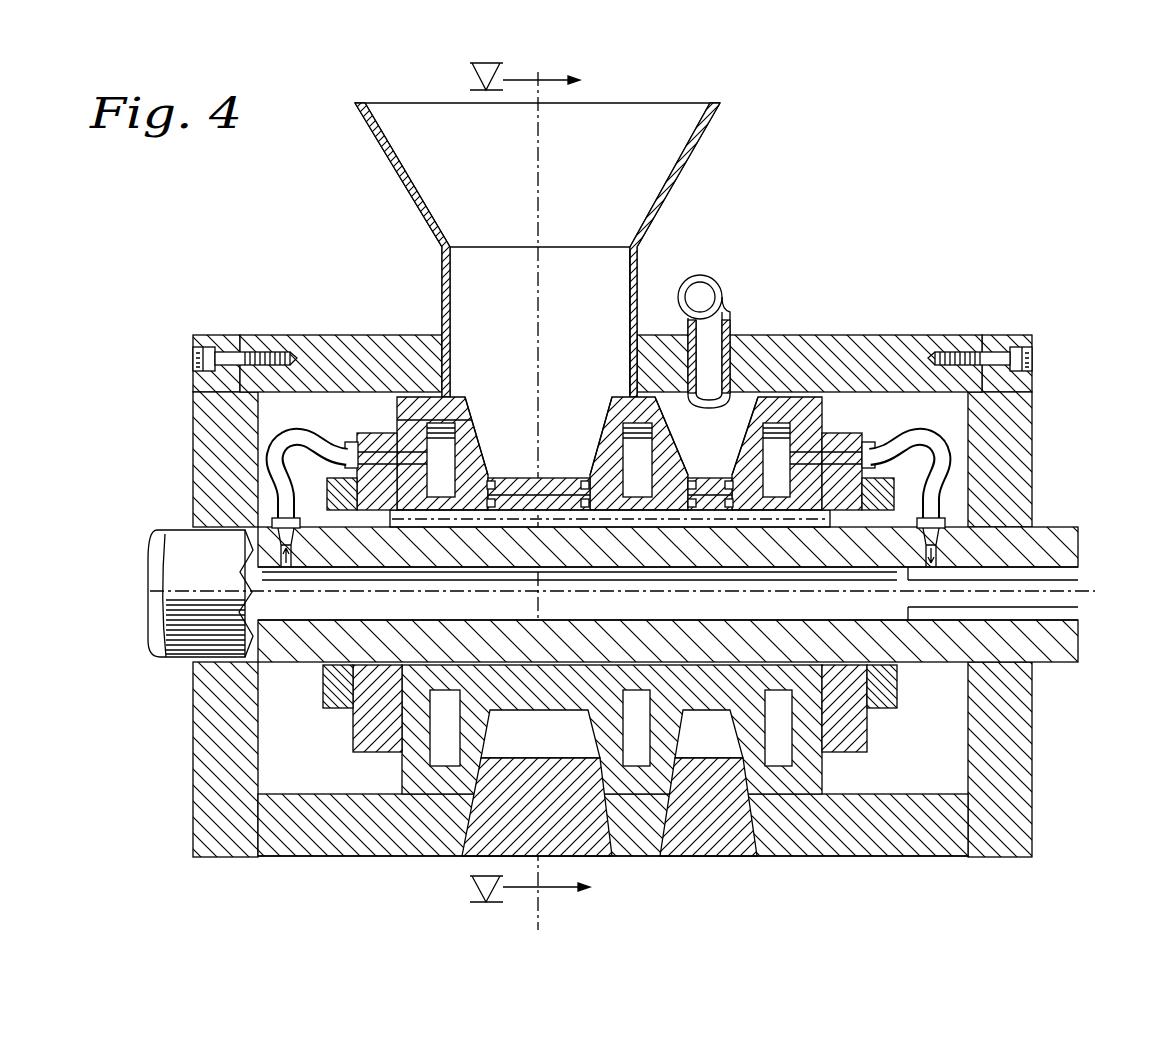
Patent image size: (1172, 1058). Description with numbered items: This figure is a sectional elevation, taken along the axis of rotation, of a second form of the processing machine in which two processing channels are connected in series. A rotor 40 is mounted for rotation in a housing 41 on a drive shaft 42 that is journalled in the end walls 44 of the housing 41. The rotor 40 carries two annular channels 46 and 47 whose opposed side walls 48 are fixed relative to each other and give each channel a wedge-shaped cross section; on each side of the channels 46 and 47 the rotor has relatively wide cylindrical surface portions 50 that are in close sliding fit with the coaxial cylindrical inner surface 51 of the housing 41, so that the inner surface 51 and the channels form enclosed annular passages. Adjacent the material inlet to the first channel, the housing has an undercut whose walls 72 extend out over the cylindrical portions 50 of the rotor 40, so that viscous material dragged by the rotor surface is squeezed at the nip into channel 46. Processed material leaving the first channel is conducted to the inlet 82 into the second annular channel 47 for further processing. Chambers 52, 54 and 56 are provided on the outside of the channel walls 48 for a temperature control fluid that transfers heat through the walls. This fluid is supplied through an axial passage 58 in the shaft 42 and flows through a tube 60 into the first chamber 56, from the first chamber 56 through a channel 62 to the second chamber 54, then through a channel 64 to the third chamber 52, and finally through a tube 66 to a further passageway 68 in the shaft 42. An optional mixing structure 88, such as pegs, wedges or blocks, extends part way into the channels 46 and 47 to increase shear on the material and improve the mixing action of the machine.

The rotor 40 is at (448, 390).
The housing 41 is at (934, 338).
The drive shaft 42 is at (1048, 527).
The end walls 44 is at (193, 400).
The annular channel 46 is at (498, 412).
The annular channel 47 is at (681, 352).
The side walls 48 is at (493, 448).
The cylindrical surface portions 50 is at (432, 405).
The cylindrical inner surface 51 is at (330, 398).
The chamber 52 is at (776, 428).
The chamber 54 is at (606, 410).
The chamber 56 is at (470, 476).
The axial passage 58 is at (1085, 602).
The tube 60 is at (316, 436).
The channel 62 is at (552, 496).
The channel 64 is at (680, 575).
The tube 66 is at (932, 456).
The further passageway 68 is at (1080, 578).
The walls of the undercut 72 is at (487, 402).
The inlet 82 is at (725, 355).
The mixing structure 88 is at (692, 846).